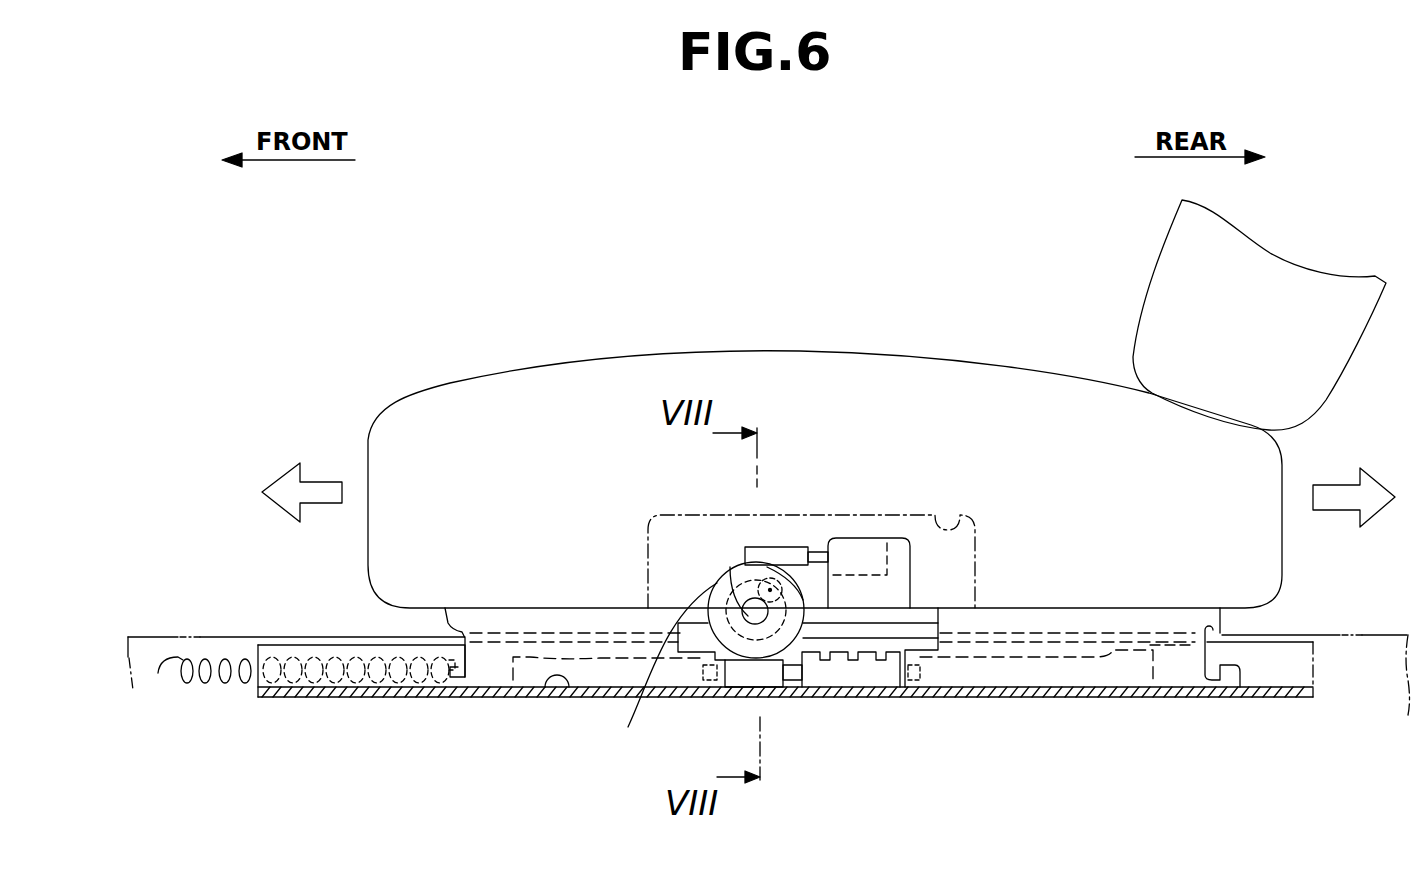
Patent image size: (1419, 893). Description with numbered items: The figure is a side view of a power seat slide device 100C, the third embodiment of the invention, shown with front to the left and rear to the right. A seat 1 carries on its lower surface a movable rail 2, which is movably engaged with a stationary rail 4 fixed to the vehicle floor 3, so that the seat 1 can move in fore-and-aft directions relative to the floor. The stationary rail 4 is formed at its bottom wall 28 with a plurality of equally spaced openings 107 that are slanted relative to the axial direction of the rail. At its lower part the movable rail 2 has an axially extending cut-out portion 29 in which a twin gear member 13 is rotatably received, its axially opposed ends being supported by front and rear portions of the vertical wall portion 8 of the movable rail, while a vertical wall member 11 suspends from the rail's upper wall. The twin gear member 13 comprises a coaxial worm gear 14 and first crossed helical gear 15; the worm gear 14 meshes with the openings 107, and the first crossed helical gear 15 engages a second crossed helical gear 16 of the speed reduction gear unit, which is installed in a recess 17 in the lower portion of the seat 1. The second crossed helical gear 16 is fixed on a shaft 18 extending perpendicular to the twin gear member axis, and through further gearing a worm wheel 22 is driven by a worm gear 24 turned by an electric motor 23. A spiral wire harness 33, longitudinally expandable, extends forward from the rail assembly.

The power seat slide device 100C is at (790, 157).
The seat 1 is at (468, 372).
The movable rail 2 is at (487, 656).
The vehicle floor 3 is at (178, 636).
The stationary rail 4 is at (332, 700).
The vertical wall portion 8 is at (1232, 697).
The vertical wall member 11 is at (500, 692).
The twin gear member 13 is at (812, 705).
The worm gear 14 is at (848, 669).
The first crossed helical gear 15 is at (768, 673).
The second crossed helical gear 16 is at (657, 670).
The recess 17 is at (975, 513).
The shaft 18 is at (732, 577).
The worm wheel 22 is at (822, 552).
The electric motor 23 is at (880, 538).
The worm gear 24 is at (772, 547).
The bottom wall 28 is at (560, 690).
The cut-out portion 29 is at (896, 697).
The wire harness 33 is at (191, 681).
The openings 107 is at (1113, 697).